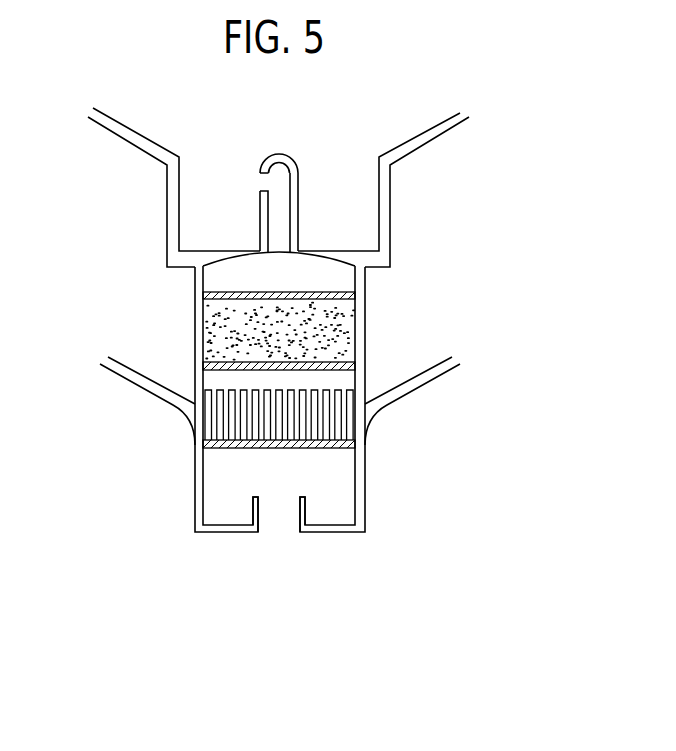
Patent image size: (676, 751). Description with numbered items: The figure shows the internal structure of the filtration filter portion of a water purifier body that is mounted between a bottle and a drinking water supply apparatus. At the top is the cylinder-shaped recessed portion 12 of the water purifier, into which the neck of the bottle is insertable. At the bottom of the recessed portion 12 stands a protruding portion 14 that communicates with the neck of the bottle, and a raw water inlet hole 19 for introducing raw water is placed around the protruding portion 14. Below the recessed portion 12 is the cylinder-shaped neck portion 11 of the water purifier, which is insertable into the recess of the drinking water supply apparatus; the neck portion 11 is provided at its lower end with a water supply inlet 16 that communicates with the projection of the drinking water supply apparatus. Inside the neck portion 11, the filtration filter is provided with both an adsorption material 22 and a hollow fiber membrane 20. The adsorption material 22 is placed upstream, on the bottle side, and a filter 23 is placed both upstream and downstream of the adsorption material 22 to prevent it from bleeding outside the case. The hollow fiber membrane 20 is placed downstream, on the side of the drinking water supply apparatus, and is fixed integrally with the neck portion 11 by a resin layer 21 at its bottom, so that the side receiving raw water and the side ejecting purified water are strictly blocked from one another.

The neck portion of the water purifier 11 is at (350, 530).
The recessed portion of the water purifier 12 is at (353, 252).
The protruding portion 14 is at (298, 187).
The water supply inlet 16 is at (273, 523).
The raw water inlet hole 19 is at (257, 181).
The hollow fiber membrane 20 is at (340, 405).
The resin layer 21 is at (350, 446).
The adsorption material 22 is at (340, 318).
The filter 23 is at (353, 295).